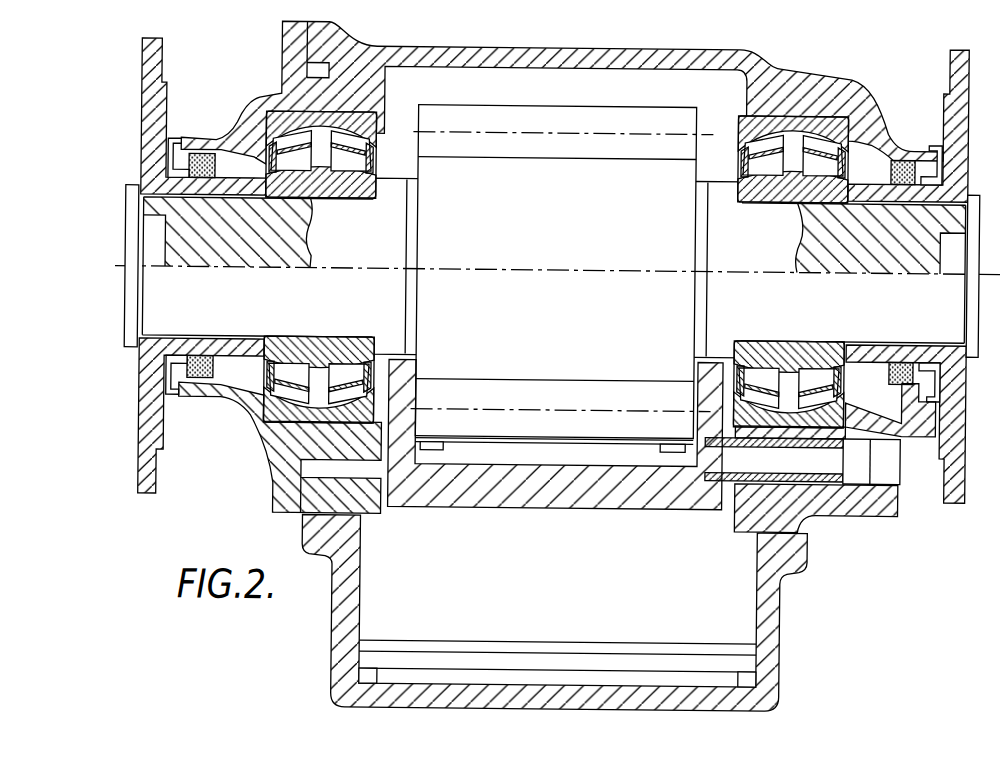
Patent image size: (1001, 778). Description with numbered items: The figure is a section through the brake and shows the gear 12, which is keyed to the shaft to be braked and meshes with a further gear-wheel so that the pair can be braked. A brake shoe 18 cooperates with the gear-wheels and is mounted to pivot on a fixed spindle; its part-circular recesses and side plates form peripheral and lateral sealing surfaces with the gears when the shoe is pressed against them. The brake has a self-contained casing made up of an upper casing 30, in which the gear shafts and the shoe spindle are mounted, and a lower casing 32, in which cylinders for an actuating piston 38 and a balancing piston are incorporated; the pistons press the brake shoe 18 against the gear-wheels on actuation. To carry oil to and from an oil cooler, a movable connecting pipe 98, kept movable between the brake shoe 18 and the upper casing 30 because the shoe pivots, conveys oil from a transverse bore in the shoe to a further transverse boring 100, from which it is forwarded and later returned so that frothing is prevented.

The gear 12 is at (543, 175).
The upper casing 30 is at (685, 66).
The brake shoe 18 is at (602, 487).
The transverse boring 100 is at (538, 456).
The movable connecting pipe 98 is at (826, 460).
The lower casing 32 is at (776, 595).
The actuating piston 38 is at (747, 666).